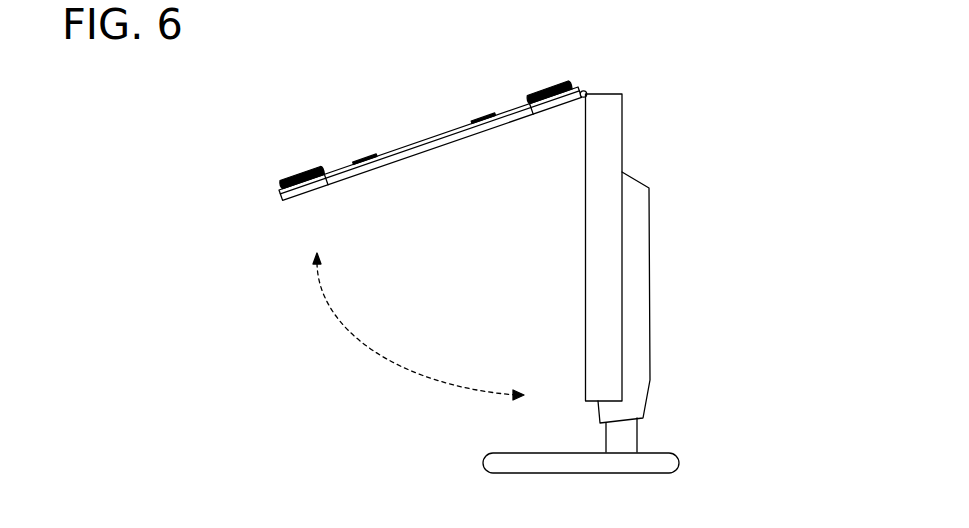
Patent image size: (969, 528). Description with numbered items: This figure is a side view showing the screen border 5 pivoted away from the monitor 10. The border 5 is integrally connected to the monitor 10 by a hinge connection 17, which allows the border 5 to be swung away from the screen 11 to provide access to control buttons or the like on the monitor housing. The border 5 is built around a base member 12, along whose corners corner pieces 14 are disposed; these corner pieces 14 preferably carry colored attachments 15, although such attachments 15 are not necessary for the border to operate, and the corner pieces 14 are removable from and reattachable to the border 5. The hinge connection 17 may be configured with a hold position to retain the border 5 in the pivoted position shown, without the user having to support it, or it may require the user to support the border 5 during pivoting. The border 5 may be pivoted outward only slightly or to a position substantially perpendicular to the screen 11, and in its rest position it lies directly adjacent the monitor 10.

The screen border 5 is at (430, 110).
The monitor 10 is at (638, 293).
The screen 11 is at (585, 288).
The base member 12 is at (399, 160).
The corner pieces 14 is at (306, 196).
The colored attachments 15 is at (310, 172).
The hinge connection 17 is at (587, 91).